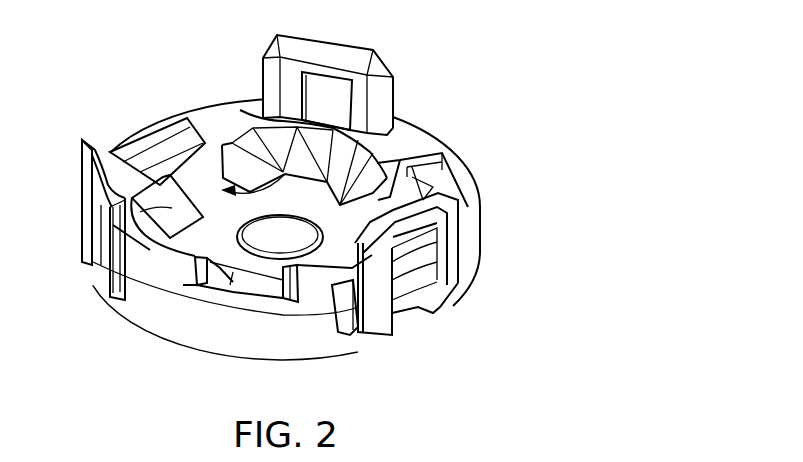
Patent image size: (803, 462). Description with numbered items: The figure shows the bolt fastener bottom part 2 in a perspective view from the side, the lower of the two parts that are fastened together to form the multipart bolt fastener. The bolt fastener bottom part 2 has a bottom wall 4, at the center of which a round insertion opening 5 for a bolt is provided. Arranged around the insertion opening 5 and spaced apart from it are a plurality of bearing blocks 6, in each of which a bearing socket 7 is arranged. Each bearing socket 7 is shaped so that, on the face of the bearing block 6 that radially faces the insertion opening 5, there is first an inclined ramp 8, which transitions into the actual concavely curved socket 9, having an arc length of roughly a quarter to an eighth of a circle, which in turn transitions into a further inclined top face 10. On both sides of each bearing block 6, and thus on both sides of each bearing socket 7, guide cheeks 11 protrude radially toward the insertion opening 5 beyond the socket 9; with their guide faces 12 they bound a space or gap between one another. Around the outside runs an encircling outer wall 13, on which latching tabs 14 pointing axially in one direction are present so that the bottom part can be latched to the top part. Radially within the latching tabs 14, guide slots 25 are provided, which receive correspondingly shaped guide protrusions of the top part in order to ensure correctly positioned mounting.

The bolt fastener bottom part 2 is at (379, 205).
The bottom wall 4 is at (267, 264).
The insertion opening 5 is at (283, 242).
The bearing block 6 is at (162, 140).
The bearing socket 7 is at (328, 181).
The inclined ramp 8 is at (205, 177).
The socket 9 is at (188, 160).
The inclined top face 10 is at (148, 152).
The guide cheek 11 is at (112, 212).
The guide face 12 is at (368, 185).
The encircling outer wall 13 is at (445, 262).
The latching tab 14 is at (444, 221).
The guide slot 25 is at (351, 292).